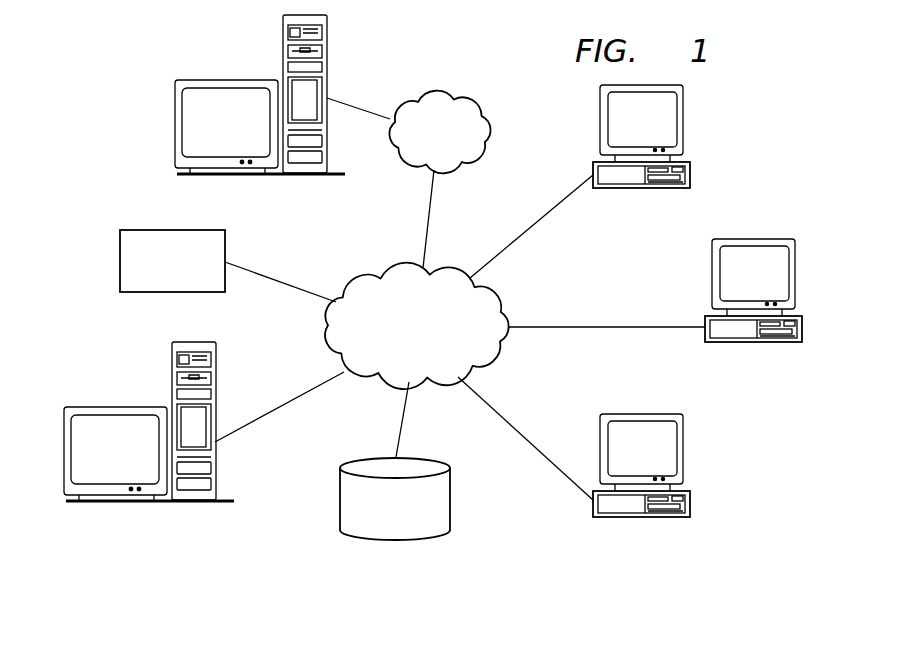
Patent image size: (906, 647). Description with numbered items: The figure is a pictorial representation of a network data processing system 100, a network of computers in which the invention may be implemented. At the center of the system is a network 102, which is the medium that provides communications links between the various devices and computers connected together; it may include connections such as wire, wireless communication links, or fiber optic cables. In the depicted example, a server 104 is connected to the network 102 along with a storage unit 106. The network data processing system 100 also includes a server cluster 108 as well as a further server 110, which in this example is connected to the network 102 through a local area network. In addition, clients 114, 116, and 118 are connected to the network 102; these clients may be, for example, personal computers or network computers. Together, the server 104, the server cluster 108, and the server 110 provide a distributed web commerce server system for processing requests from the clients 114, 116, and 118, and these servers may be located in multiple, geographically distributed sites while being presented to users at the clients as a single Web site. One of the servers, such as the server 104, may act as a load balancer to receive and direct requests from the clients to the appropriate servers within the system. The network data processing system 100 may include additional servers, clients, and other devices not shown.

The network data processing system 100 is at (120, 65).
The network 102 is at (397, 355).
The server 104 is at (172, 362).
The storage unit 106 is at (340, 500).
The server cluster 108 is at (120, 262).
The server 110 is at (283, 62).
The client 114 is at (683, 130).
The client 116 is at (470, 96).
The client 118 is at (683, 455).